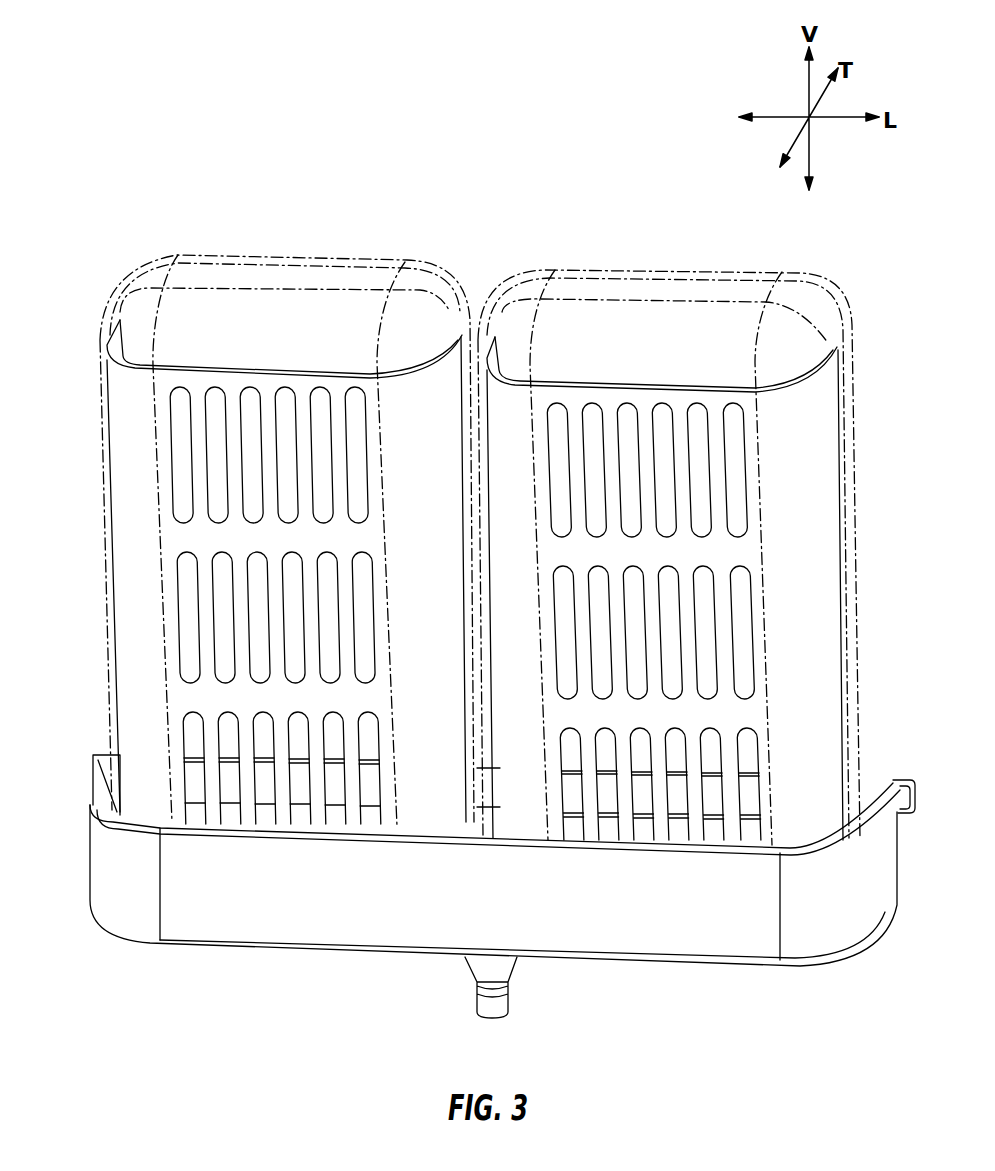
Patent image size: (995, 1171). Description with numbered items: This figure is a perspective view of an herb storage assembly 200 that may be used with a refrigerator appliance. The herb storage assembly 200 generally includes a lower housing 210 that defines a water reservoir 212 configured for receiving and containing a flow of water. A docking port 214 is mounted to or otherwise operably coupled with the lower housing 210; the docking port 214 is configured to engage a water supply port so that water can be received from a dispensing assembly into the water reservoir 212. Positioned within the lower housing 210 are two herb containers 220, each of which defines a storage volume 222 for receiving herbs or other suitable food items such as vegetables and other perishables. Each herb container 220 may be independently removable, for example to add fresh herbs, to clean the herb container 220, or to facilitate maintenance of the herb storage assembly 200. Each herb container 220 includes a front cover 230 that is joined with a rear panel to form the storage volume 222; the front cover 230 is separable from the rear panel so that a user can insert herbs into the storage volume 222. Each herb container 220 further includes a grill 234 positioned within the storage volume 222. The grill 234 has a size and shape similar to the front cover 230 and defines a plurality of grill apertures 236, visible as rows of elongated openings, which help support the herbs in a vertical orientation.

The herb storage assembly 200 is at (135, 245).
The lower housing 210 is at (828, 923).
The water reservoir 212 is at (873, 797).
The docking port 214 is at (498, 1003).
The herb container 220 is at (448, 267).
The storage volume 222 is at (153, 535).
The front cover 230 is at (658, 330).
The grill 234 is at (725, 551).
The grill apertures 236 is at (735, 657).